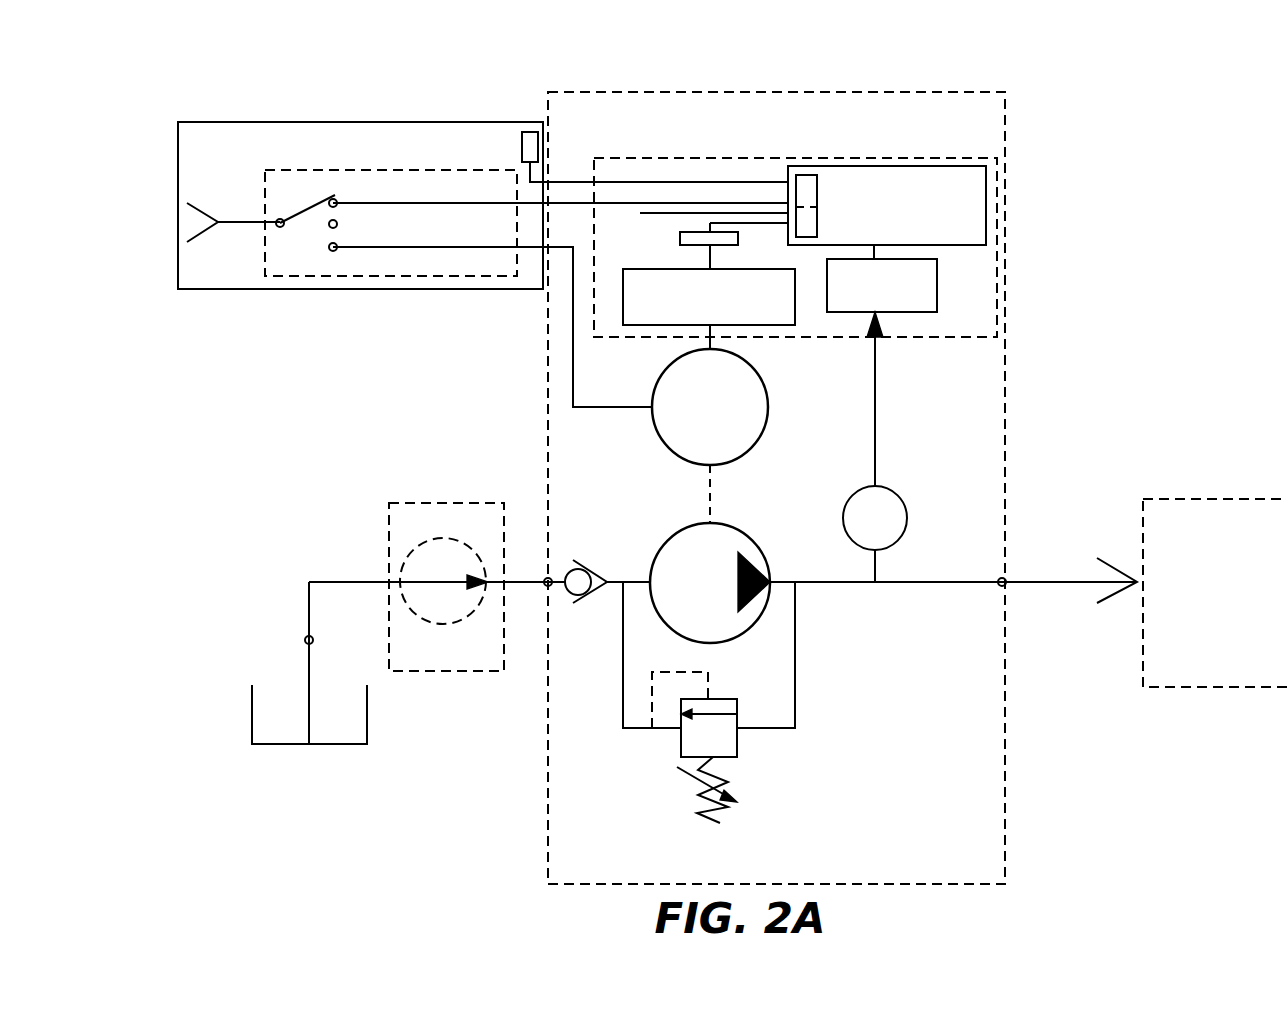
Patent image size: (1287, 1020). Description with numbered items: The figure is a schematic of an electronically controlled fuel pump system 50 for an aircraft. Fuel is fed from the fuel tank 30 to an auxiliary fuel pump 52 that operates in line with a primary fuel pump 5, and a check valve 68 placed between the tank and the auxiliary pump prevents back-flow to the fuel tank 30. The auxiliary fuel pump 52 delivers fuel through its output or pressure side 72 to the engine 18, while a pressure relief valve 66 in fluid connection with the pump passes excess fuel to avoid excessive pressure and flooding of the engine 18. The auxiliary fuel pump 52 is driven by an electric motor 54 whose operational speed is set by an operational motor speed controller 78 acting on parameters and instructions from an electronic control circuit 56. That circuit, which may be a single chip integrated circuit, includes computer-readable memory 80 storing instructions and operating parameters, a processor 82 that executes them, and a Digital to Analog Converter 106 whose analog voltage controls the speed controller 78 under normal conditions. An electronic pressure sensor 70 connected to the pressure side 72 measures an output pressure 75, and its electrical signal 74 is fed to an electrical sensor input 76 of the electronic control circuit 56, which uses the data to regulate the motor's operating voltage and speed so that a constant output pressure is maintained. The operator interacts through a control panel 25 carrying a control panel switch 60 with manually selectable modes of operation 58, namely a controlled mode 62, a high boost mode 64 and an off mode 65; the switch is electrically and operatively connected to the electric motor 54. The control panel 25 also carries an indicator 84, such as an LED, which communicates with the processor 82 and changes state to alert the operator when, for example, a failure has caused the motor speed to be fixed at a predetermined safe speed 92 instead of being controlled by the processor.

The primary fuel pump 5 is at (410, 555).
The engine 18 is at (1208, 499).
The control panel 25 is at (187, 127).
The fuel tank 30 is at (323, 745).
The fuel pump system 50 is at (517, 39).
The auxiliary fuel pump 52 is at (770, 567).
The electric motor 54 is at (768, 400).
The electronic control circuit 56 is at (930, 157).
The modes of operation 58 is at (292, 193).
The control panel switch 60 is at (265, 170).
The controlled mode 62 is at (500, 170).
The high boost mode 64 is at (335, 260).
The off mode 65 is at (327, 228).
The pressure relief valve 66 is at (727, 750).
The check valve 68 is at (572, 562).
The electronic pressure sensor 70 is at (907, 518).
The pressure side 72 is at (770, 593).
The electrical signal 74 is at (875, 353).
The output pressure 75 is at (875, 472).
The electrical sensor input 76 is at (937, 302).
The operational motor speed controller 78 is at (653, 325).
The computer-readable memory 80 is at (817, 183).
The processor 82 is at (963, 207).
The indicator 84 is at (533, 130).
The predetermined safe speed 92 is at (640, 213).
The Digital to Analog Converter 106 is at (680, 238).